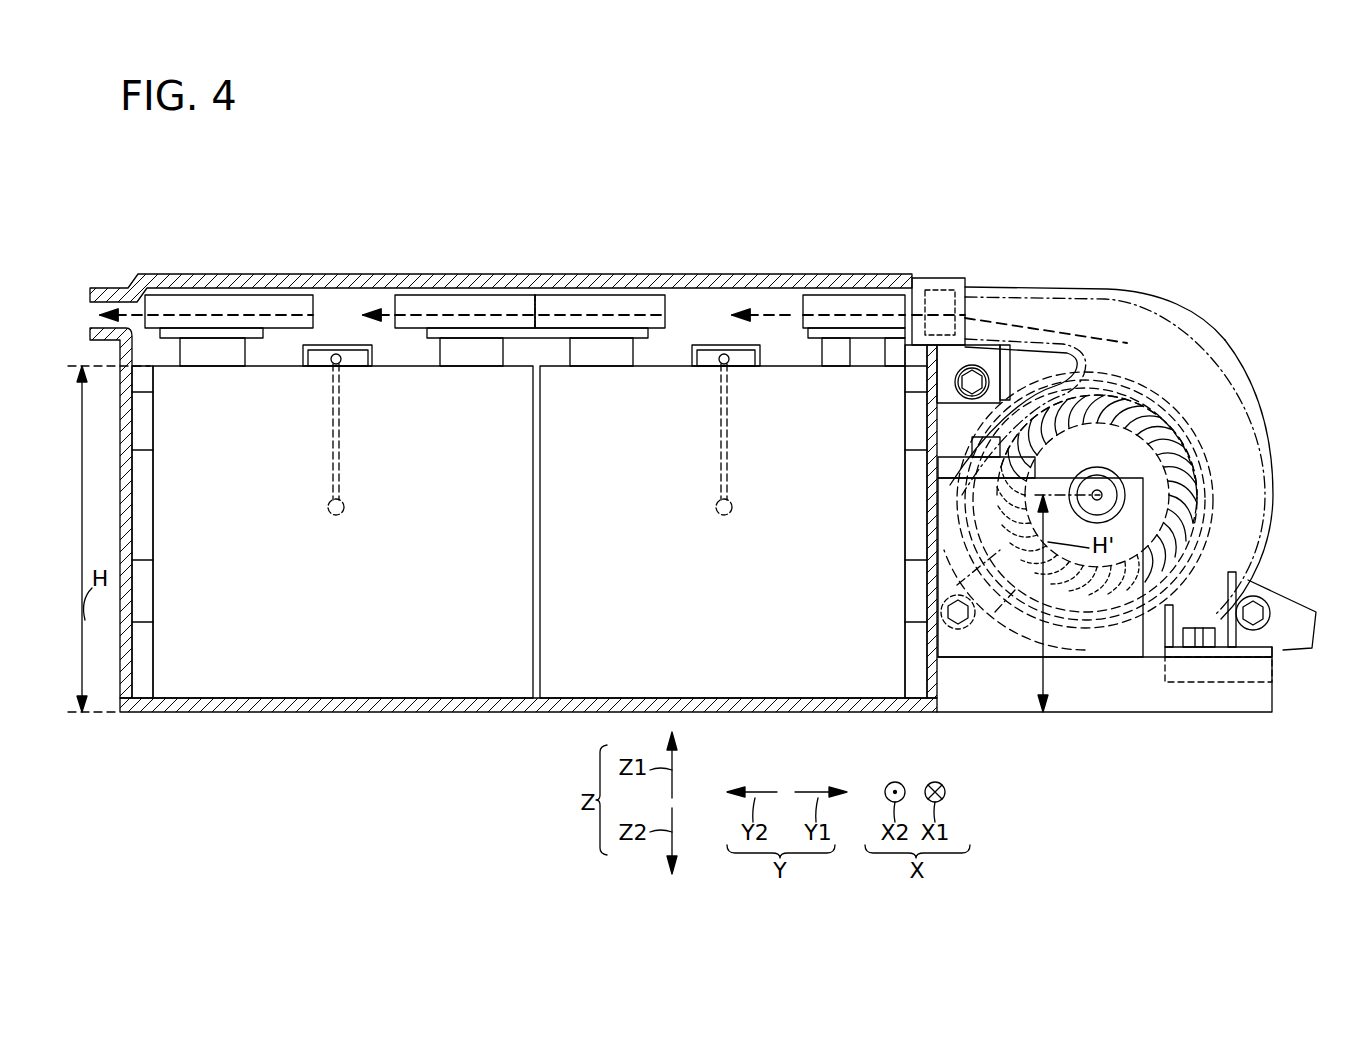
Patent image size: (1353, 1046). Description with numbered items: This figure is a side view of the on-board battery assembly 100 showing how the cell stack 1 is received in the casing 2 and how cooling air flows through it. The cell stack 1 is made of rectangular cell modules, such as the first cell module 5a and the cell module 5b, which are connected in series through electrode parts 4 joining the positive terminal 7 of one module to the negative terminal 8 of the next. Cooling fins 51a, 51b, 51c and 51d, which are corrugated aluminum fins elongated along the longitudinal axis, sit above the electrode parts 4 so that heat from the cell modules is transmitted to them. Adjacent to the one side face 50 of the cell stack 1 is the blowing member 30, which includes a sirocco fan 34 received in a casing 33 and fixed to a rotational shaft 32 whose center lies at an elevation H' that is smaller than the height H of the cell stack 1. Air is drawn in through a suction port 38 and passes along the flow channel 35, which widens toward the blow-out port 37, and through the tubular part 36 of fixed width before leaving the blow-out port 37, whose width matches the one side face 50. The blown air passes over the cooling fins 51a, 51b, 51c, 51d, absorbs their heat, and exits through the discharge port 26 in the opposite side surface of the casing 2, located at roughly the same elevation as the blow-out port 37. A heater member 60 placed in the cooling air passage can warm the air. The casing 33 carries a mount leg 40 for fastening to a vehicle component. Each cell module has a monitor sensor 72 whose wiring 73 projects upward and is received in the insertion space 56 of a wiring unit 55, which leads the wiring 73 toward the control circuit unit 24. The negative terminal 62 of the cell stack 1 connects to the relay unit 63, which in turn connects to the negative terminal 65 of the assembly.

The on-board battery assembly 100 is at (1168, 214).
The cell stack 1 is at (150, 497).
The casing 2 is at (120, 480).
The electrode part 4 is at (202, 330).
The first cell module 5a is at (565, 650).
The cell module 5b is at (332, 650).
The positive terminal 7 is at (240, 355).
The negative terminal 8 is at (482, 352).
The control circuit unit 24 is at (1272, 695).
The discharge port 26 is at (88, 308).
The blowing member 30 is at (1240, 346).
The rotational shaft 32 is at (1187, 407).
The casing 33 is at (1273, 410).
The sirocco fan 34 is at (1225, 498).
The flow channel 35 is at (1087, 310).
The tubular part 36 is at (1015, 287).
The blow-out port 37 is at (927, 310).
The suction port 38 is at (1215, 472).
The mount leg 40 is at (1205, 650).
The one side face 50 is at (938, 640).
The cooling fin 51a is at (848, 303).
The cooling fin 51b is at (643, 303).
The cooling fin 51c is at (412, 303).
The cooling fin 51d is at (253, 303).
The wiring unit 55 is at (317, 360).
The insertion space 56 is at (360, 360).
The heater member 60 is at (975, 300).
The negative terminal 62 is at (1100, 470).
The relay unit 63 is at (1150, 515).
The negative terminal 65 is at (1262, 672).
The monitor sensor 72 is at (345, 506).
The wiring 73 is at (328, 363).